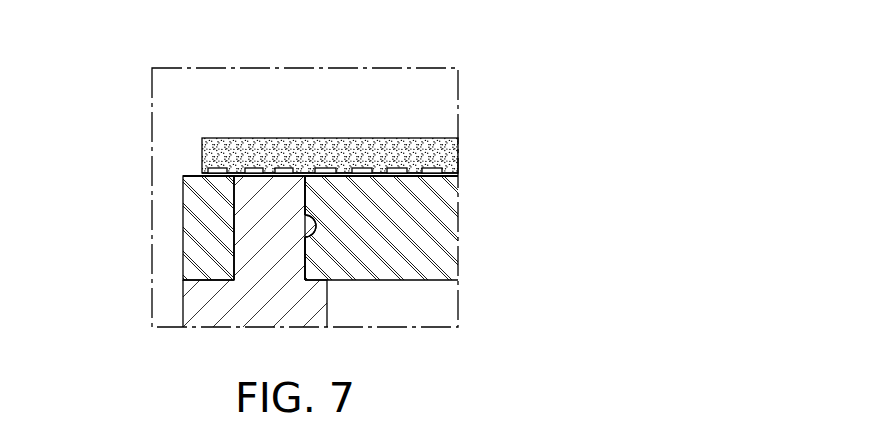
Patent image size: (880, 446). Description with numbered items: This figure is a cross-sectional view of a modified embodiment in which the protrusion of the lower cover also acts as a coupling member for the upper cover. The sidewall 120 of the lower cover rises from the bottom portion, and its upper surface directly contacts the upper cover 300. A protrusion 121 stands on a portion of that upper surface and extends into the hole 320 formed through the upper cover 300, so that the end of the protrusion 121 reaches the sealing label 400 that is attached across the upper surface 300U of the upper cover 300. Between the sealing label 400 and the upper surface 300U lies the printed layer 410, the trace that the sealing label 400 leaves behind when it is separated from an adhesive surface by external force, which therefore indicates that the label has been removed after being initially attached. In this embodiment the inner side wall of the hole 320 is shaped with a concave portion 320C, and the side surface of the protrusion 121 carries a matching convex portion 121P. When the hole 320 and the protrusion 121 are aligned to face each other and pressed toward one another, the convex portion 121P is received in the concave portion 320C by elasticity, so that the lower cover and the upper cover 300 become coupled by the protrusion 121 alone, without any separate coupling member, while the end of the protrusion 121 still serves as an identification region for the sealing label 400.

The sidewall 120 is at (192, 305).
The protrusion 121 is at (253, 192).
The convex portion 121P is at (310, 227).
The upper cover 300 is at (448, 203).
The upper surface of the upper cover 300U is at (198, 172).
The hole 320 is at (300, 222).
The concave portion 320C is at (318, 227).
The sealing label 400 is at (452, 155).
The printed layer 410 is at (447, 170).